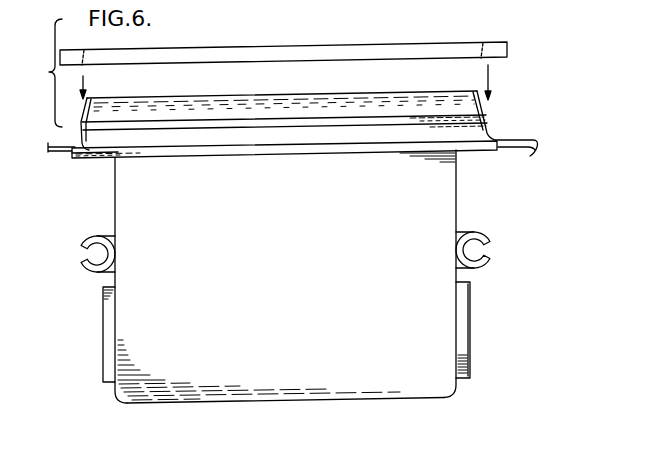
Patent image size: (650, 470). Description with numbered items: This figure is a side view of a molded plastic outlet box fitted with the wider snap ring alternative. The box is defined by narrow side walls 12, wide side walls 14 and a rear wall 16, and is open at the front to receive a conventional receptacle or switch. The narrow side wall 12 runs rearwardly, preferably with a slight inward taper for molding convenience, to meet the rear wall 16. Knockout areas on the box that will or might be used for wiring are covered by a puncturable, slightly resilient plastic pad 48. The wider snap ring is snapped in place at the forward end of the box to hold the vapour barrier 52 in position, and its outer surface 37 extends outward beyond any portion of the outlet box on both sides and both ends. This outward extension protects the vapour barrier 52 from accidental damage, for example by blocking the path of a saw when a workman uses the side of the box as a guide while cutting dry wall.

The outer surface 37 is at (508, 50).
The vapour barrier 52 is at (505, 142).
The narrow side wall 12 is at (457, 204).
The wide side wall 14 is at (273, 295).
The plastic pad 48 is at (470, 338).
The rear wall 16 is at (185, 404).